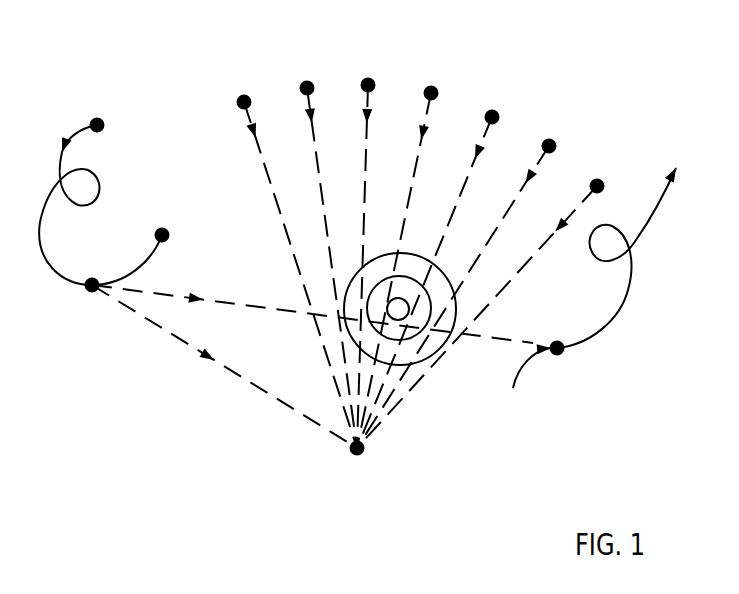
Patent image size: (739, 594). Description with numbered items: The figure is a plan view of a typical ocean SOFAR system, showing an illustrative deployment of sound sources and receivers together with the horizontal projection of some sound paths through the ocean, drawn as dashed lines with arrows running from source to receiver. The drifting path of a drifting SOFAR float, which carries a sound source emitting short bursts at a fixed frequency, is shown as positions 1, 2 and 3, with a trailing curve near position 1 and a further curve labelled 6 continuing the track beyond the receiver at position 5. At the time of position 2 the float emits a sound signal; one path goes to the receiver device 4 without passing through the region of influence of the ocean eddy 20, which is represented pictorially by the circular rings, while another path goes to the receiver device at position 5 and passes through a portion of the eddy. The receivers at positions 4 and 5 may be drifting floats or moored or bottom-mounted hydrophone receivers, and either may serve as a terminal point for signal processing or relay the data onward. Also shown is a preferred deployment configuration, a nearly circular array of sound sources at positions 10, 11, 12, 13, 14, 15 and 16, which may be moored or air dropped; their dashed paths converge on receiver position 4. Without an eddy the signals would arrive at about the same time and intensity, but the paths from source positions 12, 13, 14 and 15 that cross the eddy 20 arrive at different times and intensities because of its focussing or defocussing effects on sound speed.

The position 1 is at (72, 151).
The position 2 is at (68, 274).
The position 3 is at (130, 246).
The receiver device 4 is at (240, 383).
The receiver device position 5 is at (336, 338).
The sixth position / departure path 6 is at (621, 257).
The sound source position 10 is at (285, 251).
The sound source position 11 is at (320, 244).
The sound source position 12 is at (369, 243).
The sound source position 13 is at (404, 246).
The sound source position 14 is at (435, 257).
The sound source position 15 is at (464, 271).
The sound source position 16 is at (490, 293).
The ocean eddy 20 is at (442, 362).